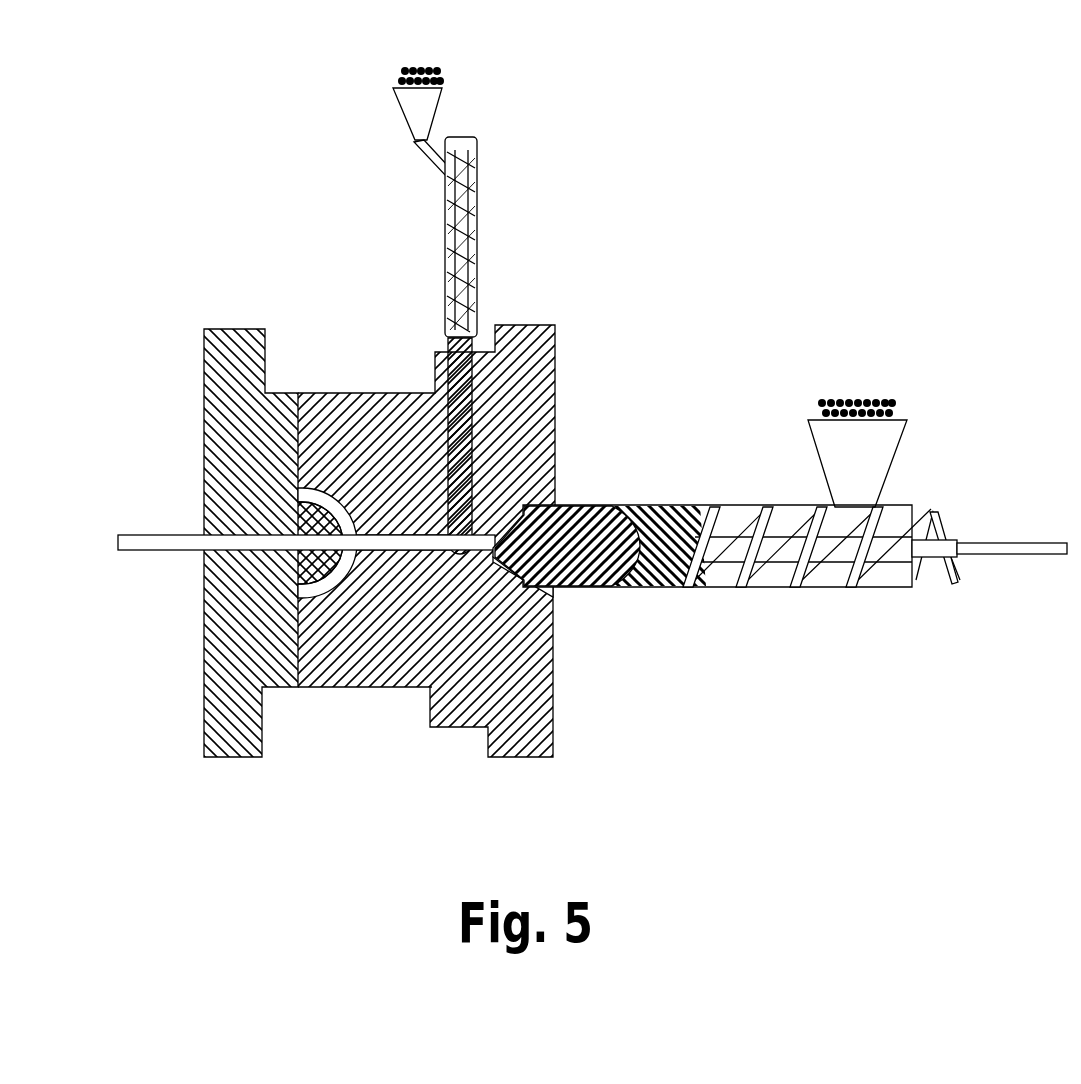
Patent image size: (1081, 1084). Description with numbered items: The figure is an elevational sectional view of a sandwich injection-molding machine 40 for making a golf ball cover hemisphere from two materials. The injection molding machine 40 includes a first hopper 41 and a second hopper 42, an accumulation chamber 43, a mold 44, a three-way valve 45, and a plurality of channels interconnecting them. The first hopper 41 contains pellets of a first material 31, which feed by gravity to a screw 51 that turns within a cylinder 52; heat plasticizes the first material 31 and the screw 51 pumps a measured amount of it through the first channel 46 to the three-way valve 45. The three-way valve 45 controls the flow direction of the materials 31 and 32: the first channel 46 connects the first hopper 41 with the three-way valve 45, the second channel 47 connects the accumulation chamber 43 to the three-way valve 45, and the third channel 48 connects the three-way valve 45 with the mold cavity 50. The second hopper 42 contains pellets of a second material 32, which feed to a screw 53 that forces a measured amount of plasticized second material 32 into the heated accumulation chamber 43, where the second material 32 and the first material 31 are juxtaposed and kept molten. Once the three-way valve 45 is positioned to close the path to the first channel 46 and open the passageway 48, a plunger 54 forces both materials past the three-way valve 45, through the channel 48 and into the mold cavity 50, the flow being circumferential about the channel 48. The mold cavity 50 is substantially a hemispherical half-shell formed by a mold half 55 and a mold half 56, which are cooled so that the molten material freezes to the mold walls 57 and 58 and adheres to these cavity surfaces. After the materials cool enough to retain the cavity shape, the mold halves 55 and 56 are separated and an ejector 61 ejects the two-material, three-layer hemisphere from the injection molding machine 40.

The first material 31 is at (580, 588).
The second material 32 is at (668, 510).
The sandwich injection-molding machine 40 is at (696, 292).
The first hopper 41 is at (402, 118).
The second hopper 42 is at (900, 462).
The accumulation chamber 43 is at (655, 588).
The mold 44 is at (300, 356).
The three-way valve 45 is at (557, 445).
The first channel 46 is at (510, 392).
The second channel 47 is at (478, 558).
The third channel 48 is at (403, 548).
The mold cavity 50 is at (330, 488).
The screw 51 is at (479, 168).
The cylinder 52 is at (479, 272).
The screw 53 is at (747, 512).
The plunger 54 is at (1010, 540).
The mold half 55 is at (225, 425).
The mold half 56 is at (318, 688).
The mold wall 57 is at (350, 505).
The mold wall 58 is at (315, 510).
The ejector 61 is at (157, 552).